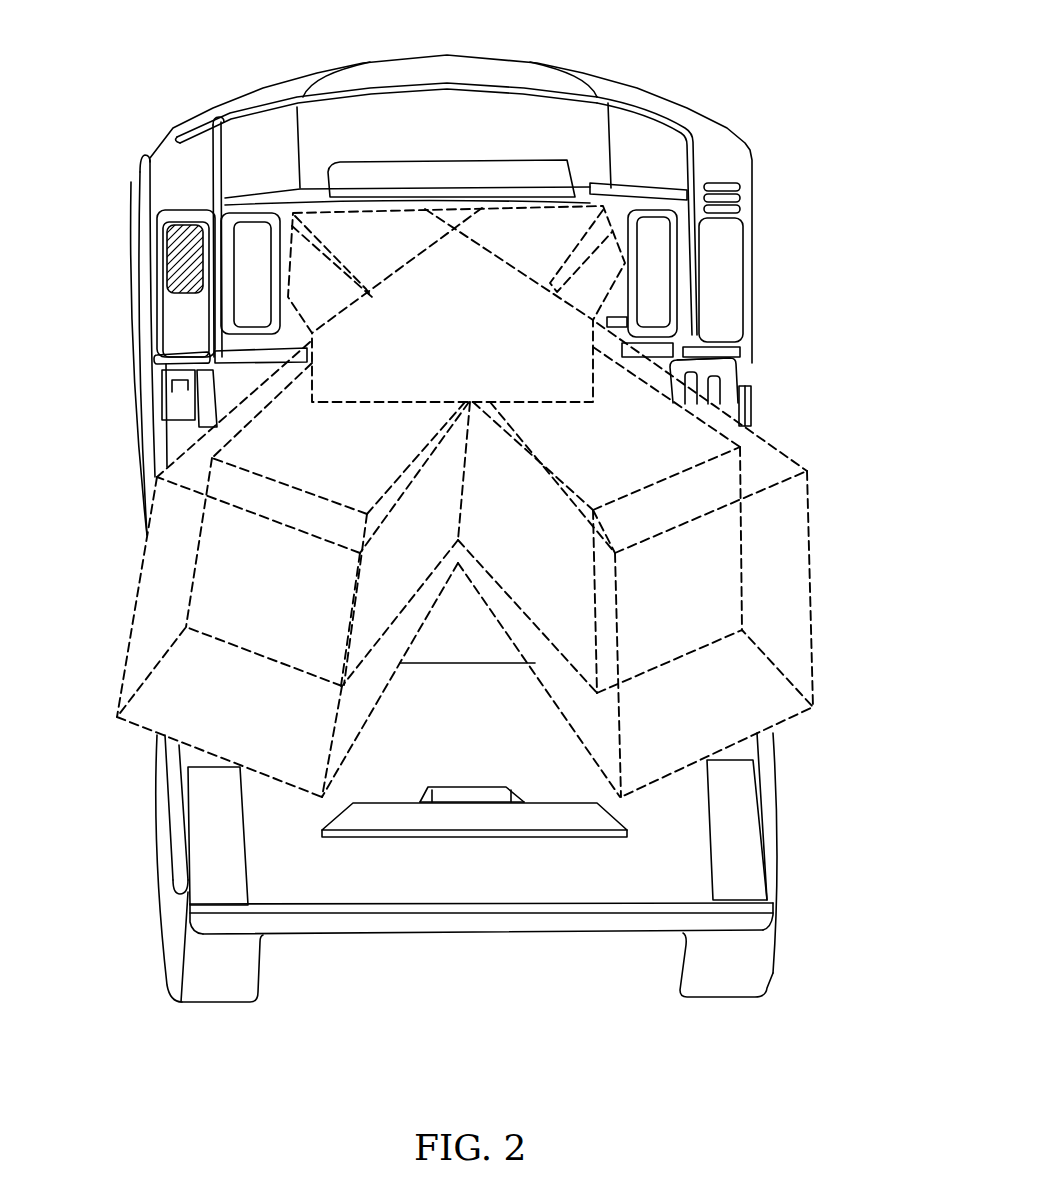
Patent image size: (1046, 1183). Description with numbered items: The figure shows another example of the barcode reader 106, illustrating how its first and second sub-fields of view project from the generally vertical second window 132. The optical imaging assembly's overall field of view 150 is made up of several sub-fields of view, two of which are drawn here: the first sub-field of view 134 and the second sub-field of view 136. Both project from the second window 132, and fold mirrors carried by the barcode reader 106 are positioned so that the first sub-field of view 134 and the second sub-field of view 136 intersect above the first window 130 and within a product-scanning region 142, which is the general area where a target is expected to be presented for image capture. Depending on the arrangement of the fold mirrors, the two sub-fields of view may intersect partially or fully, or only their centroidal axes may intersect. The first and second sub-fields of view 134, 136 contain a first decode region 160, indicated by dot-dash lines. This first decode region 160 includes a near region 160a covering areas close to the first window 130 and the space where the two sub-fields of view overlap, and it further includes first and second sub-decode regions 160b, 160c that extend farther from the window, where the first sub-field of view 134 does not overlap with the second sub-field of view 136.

The barcode reader 106 is at (190, 50).
The first window 130 is at (457, 640).
The second window 132 is at (593, 322).
The first sub-field of view 134 is at (768, 468).
The second sub-field of view 136 is at (157, 565).
The product-scanning region 142 is at (733, 372).
The field of view 150 is at (822, 482).
The first decode region 160 is at (500, 303).
The near region 160a is at (260, 387).
The first sub-decode region 160b is at (723, 433).
The second sub-decode region 160c is at (300, 493).